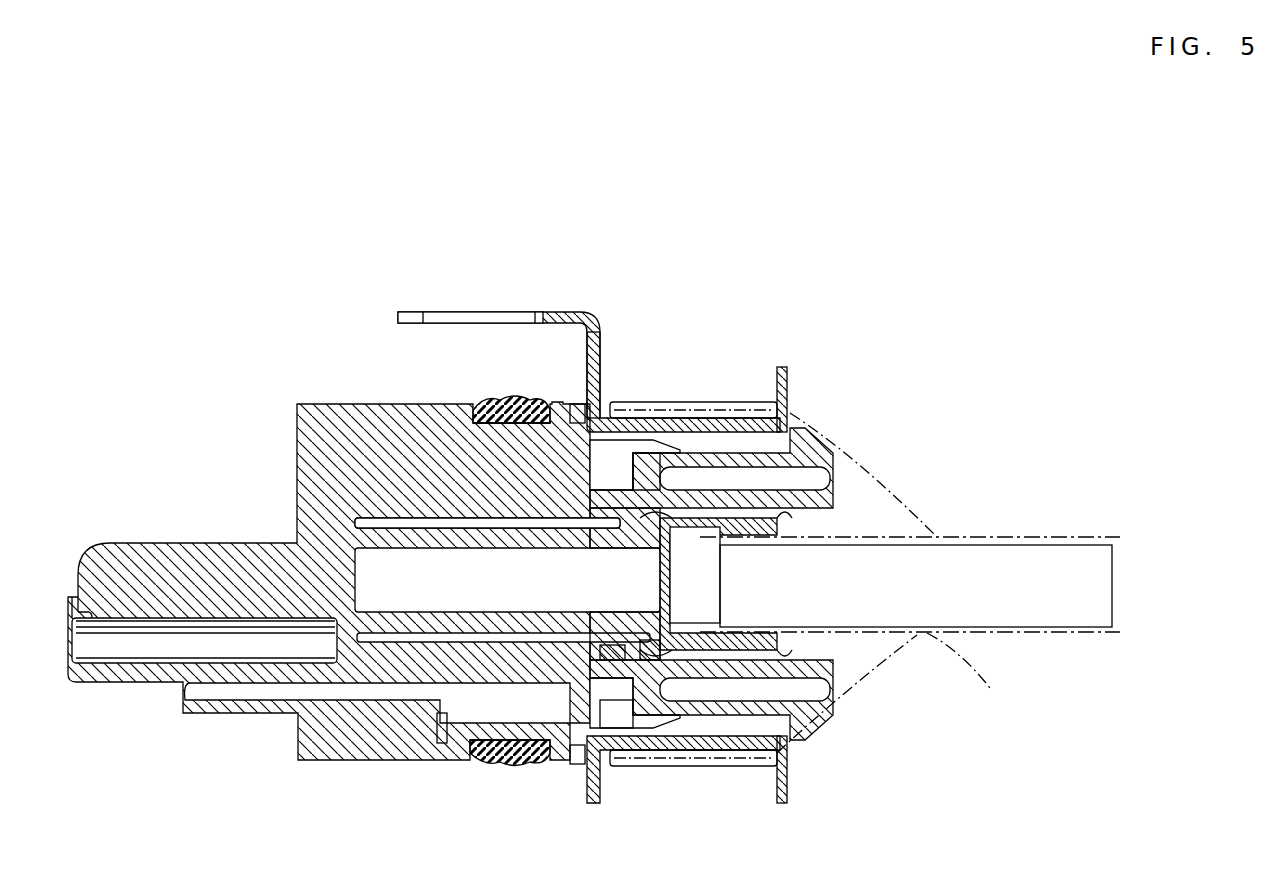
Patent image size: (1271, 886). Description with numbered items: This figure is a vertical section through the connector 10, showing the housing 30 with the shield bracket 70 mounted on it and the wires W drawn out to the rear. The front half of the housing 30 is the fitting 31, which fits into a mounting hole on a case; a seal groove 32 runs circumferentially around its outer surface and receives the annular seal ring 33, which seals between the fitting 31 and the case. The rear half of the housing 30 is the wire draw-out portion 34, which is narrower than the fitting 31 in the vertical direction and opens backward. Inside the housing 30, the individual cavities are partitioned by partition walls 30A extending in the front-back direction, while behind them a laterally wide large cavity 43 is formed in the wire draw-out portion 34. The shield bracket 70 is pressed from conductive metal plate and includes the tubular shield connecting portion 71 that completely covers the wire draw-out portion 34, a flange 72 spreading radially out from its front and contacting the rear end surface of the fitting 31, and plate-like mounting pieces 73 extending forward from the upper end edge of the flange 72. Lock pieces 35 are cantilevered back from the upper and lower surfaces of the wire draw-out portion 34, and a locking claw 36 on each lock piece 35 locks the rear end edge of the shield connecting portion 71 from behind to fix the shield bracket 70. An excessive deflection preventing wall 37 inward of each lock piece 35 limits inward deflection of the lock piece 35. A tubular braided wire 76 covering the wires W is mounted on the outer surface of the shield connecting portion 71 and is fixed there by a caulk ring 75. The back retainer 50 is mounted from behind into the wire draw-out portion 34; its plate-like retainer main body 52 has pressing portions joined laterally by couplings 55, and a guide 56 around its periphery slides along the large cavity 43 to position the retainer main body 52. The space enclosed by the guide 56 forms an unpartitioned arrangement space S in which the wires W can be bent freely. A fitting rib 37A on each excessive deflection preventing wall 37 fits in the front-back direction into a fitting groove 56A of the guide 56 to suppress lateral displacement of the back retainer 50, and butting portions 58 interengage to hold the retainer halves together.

The connector 10 is at (692, 238).
The housing 30 is at (316, 352).
The fitting 31 is at (355, 440).
The partition wall 30A is at (425, 580).
The seal groove 32 is at (482, 765).
The seal ring 33 is at (515, 765).
The wire draw-out portion 34 is at (757, 710).
The lock piece 35 is at (742, 455).
The locking claw 36 is at (800, 433).
The excessive deflection preventing wall 37 is at (817, 480).
The fitting rib 37A is at (830, 537).
The large cavity 43 is at (688, 655).
The back retainer 50 is at (713, 508).
The retainer main body 52 is at (627, 667).
The coupling 55 is at (720, 550).
The guide 56 is at (750, 527).
The fitting groove 56A is at (658, 520).
The butting portion 58 is at (678, 565).
The shield bracket 70 is at (589, 513).
The shield connecting portion 71 is at (660, 418).
The flange 72 is at (587, 365).
The mounting piece 73 is at (470, 312).
The caulk ring 75 is at (718, 736).
The braided wire 76 is at (990, 688).
The arrangement space S is at (722, 600).
The wire W is at (904, 637).